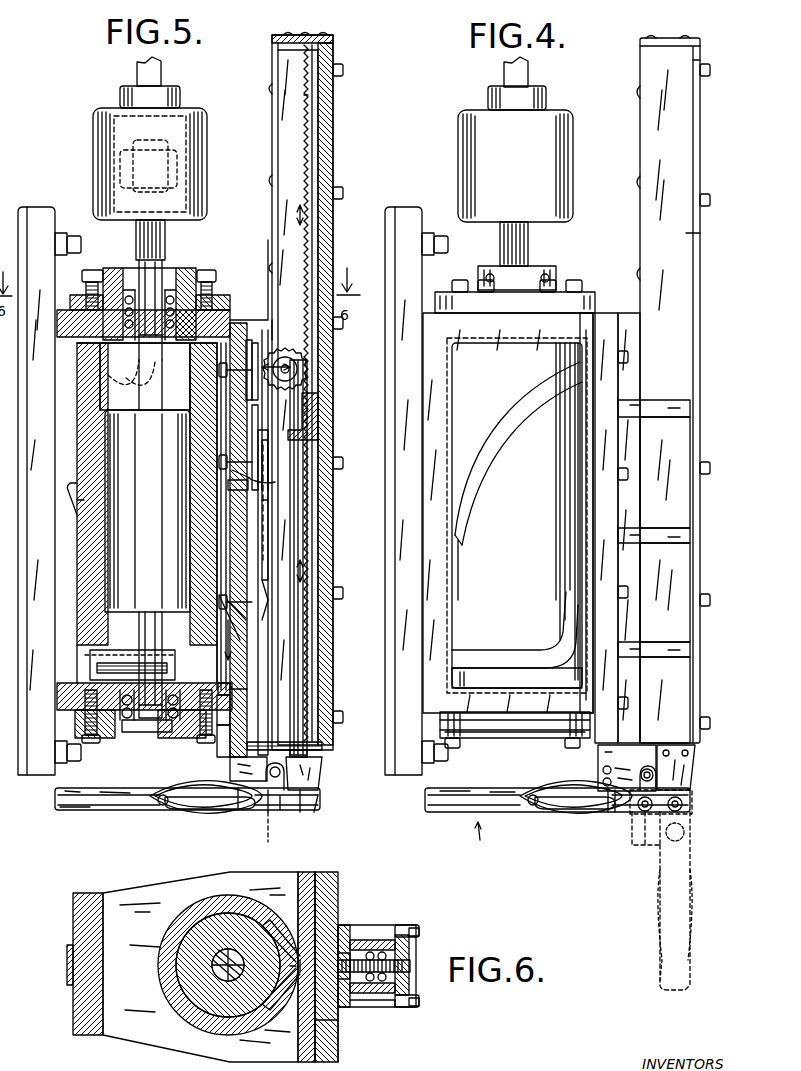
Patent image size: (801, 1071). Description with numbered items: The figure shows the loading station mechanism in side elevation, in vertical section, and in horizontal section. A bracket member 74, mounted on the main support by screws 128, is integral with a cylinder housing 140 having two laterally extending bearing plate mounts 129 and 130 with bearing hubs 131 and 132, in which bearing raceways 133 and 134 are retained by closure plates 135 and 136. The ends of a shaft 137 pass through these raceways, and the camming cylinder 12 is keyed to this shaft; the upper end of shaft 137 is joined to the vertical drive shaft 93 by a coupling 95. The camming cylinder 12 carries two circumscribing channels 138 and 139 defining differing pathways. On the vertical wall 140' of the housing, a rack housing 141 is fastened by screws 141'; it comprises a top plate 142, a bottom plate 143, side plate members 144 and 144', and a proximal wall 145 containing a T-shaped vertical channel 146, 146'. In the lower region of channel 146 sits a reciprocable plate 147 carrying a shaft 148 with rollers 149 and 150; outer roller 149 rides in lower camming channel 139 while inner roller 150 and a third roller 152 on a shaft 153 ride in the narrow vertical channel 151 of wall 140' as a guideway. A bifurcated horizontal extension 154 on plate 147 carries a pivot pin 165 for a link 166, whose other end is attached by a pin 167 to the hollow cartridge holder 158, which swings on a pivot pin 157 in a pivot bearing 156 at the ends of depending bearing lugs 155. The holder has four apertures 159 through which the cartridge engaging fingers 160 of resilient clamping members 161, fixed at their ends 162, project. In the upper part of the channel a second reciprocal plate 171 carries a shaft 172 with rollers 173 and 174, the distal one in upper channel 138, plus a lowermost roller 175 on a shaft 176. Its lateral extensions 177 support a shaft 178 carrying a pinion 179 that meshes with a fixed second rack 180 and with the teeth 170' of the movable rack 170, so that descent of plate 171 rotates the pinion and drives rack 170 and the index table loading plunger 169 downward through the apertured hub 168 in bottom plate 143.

In FIG. 5, the camming cylinder 12 is at (68, 392).
In FIG. 4, the camming cylinder 12 is at (566, 290).
In FIG. 6, the camming cylinder 12 is at (165, 1017).
In FIG. 5, the bracket member 74 is at (40, 207).
In FIG. 4, the bracket member 74 is at (403, 491).
In FIG. 6, the bracket member 74 is at (75, 966).
In FIG. 5, the vertical shaft 93 is at (137, 69).
In FIG. 4, the vertical shaft 93 is at (504, 74).
In FIG. 5, the coupling 95 is at (207, 155).
In FIG. 4, the coupling 95 is at (573, 172).
In FIG. 5, the screws 128 is at (80, 247).
In FIG. 4, the screws 128 is at (448, 245).
In FIG. 5, the bearing plate mount 129 is at (216, 300).
In FIG. 5, the bearing plate mount 130 is at (192, 725).
In FIG. 5, the bearing hub 131 is at (196, 272).
In FIG. 4, the bearing hub 131 is at (440, 292).
In FIG. 5, the bearing hub 132 is at (107, 722).
In FIG. 4, the bearing hub 132 is at (485, 722).
In FIG. 5, the bearing raceway 133 is at (112, 272).
In FIG. 5, the bearing raceway 134 is at (136, 722).
In FIG. 5, the closure plate 135 is at (181, 268).
In FIG. 4, the closure plate 135 is at (543, 266).
In FIG. 5, the closure plate 136 is at (166, 735).
In FIG. 4, the closure plate 136 is at (528, 733).
In FIG. 5, the shaft 137 is at (139, 558).
In FIG. 6, the shaft 137 is at (212, 974).
In FIG. 5, the camming channel 138 is at (70, 498).
In FIG. 4, the camming channel 138 is at (512, 383).
In FIG. 5, the camming channel 139 is at (85, 652).
In FIG. 4, the camming channel 139 is at (556, 655).
In FIG. 5, the cylinder housing 140 is at (142, 688).
In FIG. 4, the cylinder housing 140 is at (586, 477).
In FIG. 6, the cylinder housing 140 is at (200, 968).
In FIG. 4, the vertical wall 140' is at (613, 506).
In FIG. 6, the vertical wall 140' is at (311, 950).
In FIG. 5, the rack housing 141 is at (280, 397).
In FIG. 4, the rack housing 141 is at (673, 390).
In FIG. 6, the rack housing 141 is at (418, 951).
In FIG. 4, the screws 141' is at (654, 528).
In FIG. 6, the screws 141' is at (435, 966).
In FIG. 5, the top plate 142 is at (300, 35).
In FIG. 4, the top plate 142 is at (671, 38).
In FIG. 5, the bottom plate 143 is at (310, 747).
In FIG. 5, the side plate member 144 is at (319, 392).
In FIG. 4, the side plate member 144 is at (712, 115).
In FIG. 6, the side plate member 144 is at (419, 965).
In FIG. 4, the side plate member 144' is at (711, 233).
In FIG. 6, the side plate member 144' is at (380, 1015).
In FIG. 5, the proximal wall 145 is at (247, 660).
In FIG. 6, the proximal wall 145 is at (333, 872).
In FIG. 5, the vertical channel 146 is at (251, 365).
In FIG. 6, the vertical channel 146 is at (377, 940).
In FIG. 5, the vertical channel 146' is at (278, 466).
In FIG. 6, the vertical channel 146' is at (371, 922).
In FIG. 5, the reciprocable plate 147 is at (247, 730).
In FIG. 5, the shaft 148 is at (249, 617).
In FIG. 5, the outer roller 149 is at (247, 644).
In FIG. 5, the inner roller 150 is at (264, 580).
In FIG. 5, the vertical channel 151 is at (230, 498).
In FIG. 6, the vertical channel 151 is at (340, 1007).
In FIG. 5, the third roller 152 is at (230, 700).
In FIG. 5, the shaft 153 is at (247, 690).
In FIG. 5, the bifurcated horizontal extension 154 is at (230, 768).
In FIG. 4, the bifurcated horizontal extension 154 is at (600, 770).
In FIG. 5, the bearing lugs 155 is at (318, 786).
In FIG. 4, the bearing lugs 155 is at (690, 780).
In FIG. 4, the pivot bearing 156 is at (682, 806).
In FIG. 5, the pivot pin 157 is at (311, 812).
In FIG. 4, the pivot pin 157 is at (684, 797).
In FIG. 5, the cartridge holder 158 is at (120, 810).
In FIG. 4, the cartridge holder 158 is at (513, 810).
In FIG. 5, the apertures 159 is at (162, 806).
In FIG. 4, the apertures 159 is at (535, 806).
In FIG. 5, the cartridge engaging finger 160 is at (180, 815).
In FIG. 4, the cartridge engaging finger 160 is at (560, 814).
In FIG. 5, the resilient clamping member 161 is at (210, 810).
In FIG. 4, the resilient clamping member 161 is at (588, 812).
In FIG. 5, the end of clamping member 162 is at (240, 810).
In FIG. 4, the end of clamping member 162 is at (610, 812).
In FIG. 5, the pivot pin 165 is at (281, 773).
In FIG. 4, the pivot pin 165 is at (647, 768).
In FIG. 5, the link 166 is at (282, 812).
In FIG. 4, the link 166 is at (690, 850).
In FIG. 5, the pin 167 is at (265, 832).
In FIG. 4, the pin 167 is at (645, 839).
In FIG. 5, the apertured hub 168 is at (310, 757).
In FIG. 5, the index table loading plunger 169 is at (307, 493).
In FIG. 5, the vertically reciprocable rack 170 is at (332, 393).
In FIG. 6, the vertically reciprocable rack 170 is at (390, 966).
In FIG. 5, the rack teeth 170' is at (338, 108).
In FIG. 5, the second reciprocal plate 171 is at (258, 408).
In FIG. 6, the second reciprocal plate 171 is at (338, 1025).
In FIG. 5, the shaft 172 is at (287, 372).
In FIG. 5, the roller 173 is at (246, 340).
In FIG. 6, the roller 173 is at (290, 950).
In FIG. 5, the roller 174 is at (256, 340).
In FIG. 6, the roller 174 is at (292, 1000).
In FIG. 5, the lowermost roller 175 is at (220, 458).
In FIG. 5, the shaft 176 is at (262, 480).
In FIG. 5, the lateral extensions 177 is at (305, 400).
In FIG. 6, the lateral extensions 177 is at (386, 940).
In FIG. 5, the shaft 178 is at (300, 380).
In FIG. 5, the pinion 179 is at (292, 360).
In FIG. 6, the pinion 179 is at (404, 980).
In FIG. 5, the second rack 180 is at (262, 530).
In FIG. 6, the second rack 180 is at (380, 940).